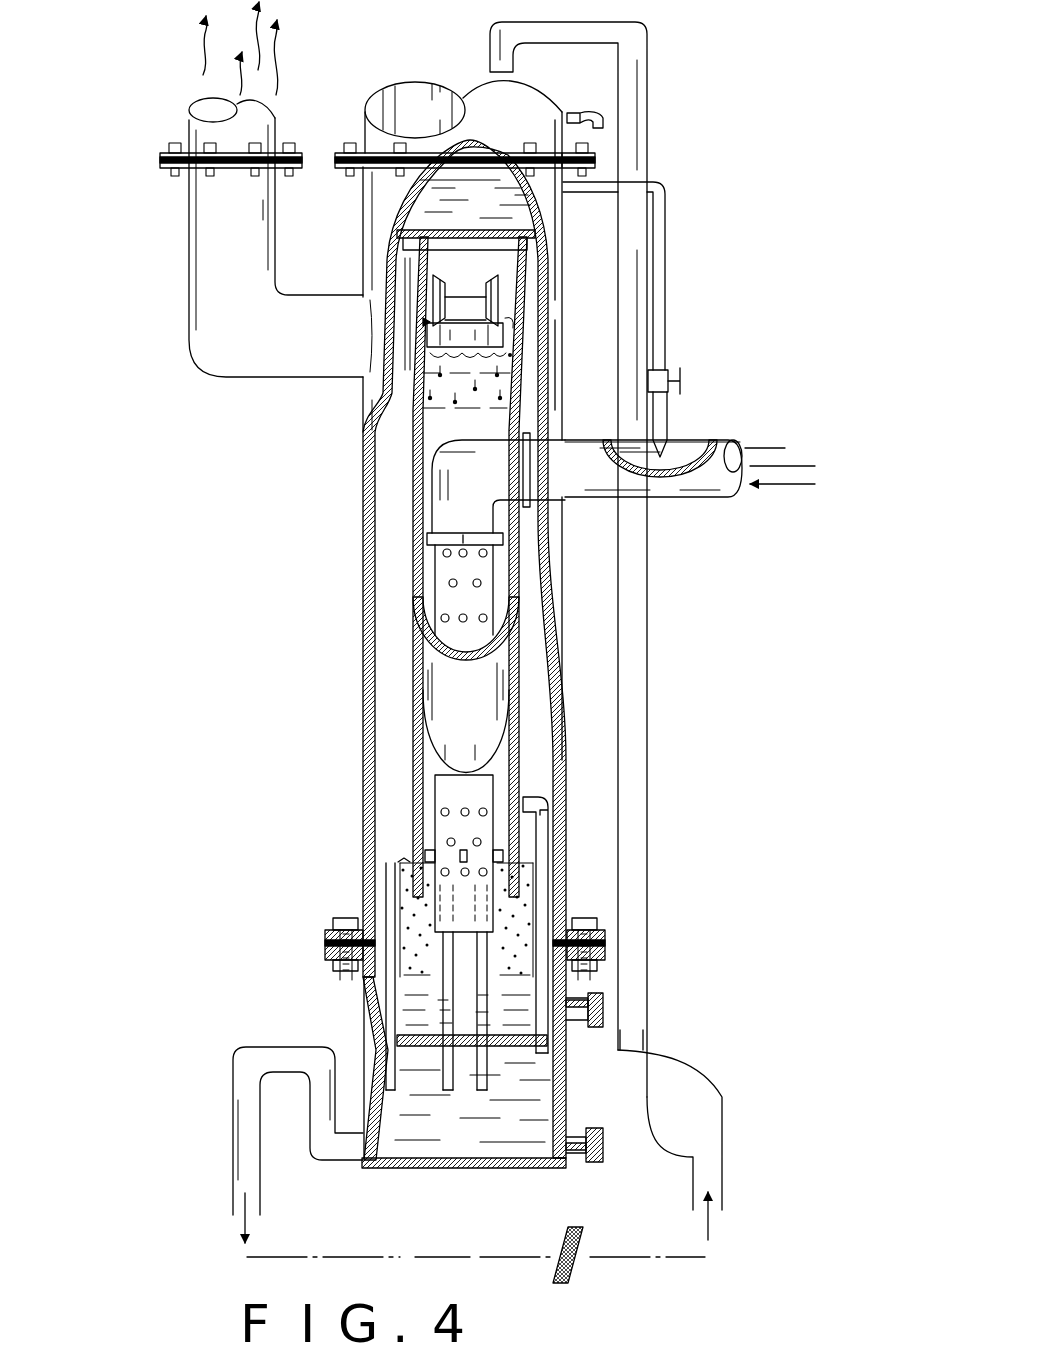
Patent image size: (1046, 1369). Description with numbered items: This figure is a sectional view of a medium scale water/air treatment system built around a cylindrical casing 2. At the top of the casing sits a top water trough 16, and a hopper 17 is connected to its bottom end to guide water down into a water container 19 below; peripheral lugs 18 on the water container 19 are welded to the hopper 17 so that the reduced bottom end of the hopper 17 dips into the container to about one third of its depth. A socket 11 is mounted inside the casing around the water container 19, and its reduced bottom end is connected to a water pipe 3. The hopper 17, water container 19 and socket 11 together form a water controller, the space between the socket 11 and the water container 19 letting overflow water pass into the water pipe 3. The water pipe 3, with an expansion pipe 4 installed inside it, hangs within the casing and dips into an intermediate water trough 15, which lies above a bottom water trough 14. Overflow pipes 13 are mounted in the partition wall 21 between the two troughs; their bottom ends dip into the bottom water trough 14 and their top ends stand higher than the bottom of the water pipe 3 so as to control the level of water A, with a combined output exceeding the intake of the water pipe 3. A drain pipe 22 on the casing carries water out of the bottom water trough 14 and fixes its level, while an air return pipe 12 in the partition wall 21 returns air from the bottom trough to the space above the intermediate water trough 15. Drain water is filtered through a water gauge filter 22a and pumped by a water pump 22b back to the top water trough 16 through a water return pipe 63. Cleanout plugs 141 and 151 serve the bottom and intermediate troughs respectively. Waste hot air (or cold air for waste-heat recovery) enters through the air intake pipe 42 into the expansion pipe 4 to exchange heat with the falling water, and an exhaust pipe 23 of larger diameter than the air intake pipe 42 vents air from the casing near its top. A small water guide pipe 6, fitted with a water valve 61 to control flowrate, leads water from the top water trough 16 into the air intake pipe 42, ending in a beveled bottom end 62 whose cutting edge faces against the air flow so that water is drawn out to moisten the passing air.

The cylindrical casing 2 is at (350, 516).
The water pipe 3 is at (432, 700).
The expansion pipe 4 is at (460, 795).
The small water guide pipe 6 is at (663, 417).
The socket 11 is at (390, 404).
The air return pipe 12 is at (548, 832).
The overflow pipes 13 is at (392, 887).
The bottom water trough 14 is at (530, 1095).
The intermediate water trough 15 is at (520, 900).
The top water trough 16 is at (507, 191).
The hopper 17 is at (493, 265).
The peripheral lugs 18 is at (488, 307).
The water container 19 is at (493, 338).
The partition wall 21 is at (427, 1047).
The drain pipe 22 is at (248, 1112).
The water gauge filter 22a is at (565, 1237).
The water pump 22b is at (703, 1082).
The exhaust pipe 23 is at (215, 236).
The air intake pipe 42 is at (727, 483).
The water valve 61 is at (683, 380).
The beveled bottom end 62 is at (658, 453).
The water return pipe 63 is at (650, 662).
The cleanout plug 141 is at (605, 1150).
The cleanout plug 151 is at (603, 1010).
The level of water A is at (402, 863).